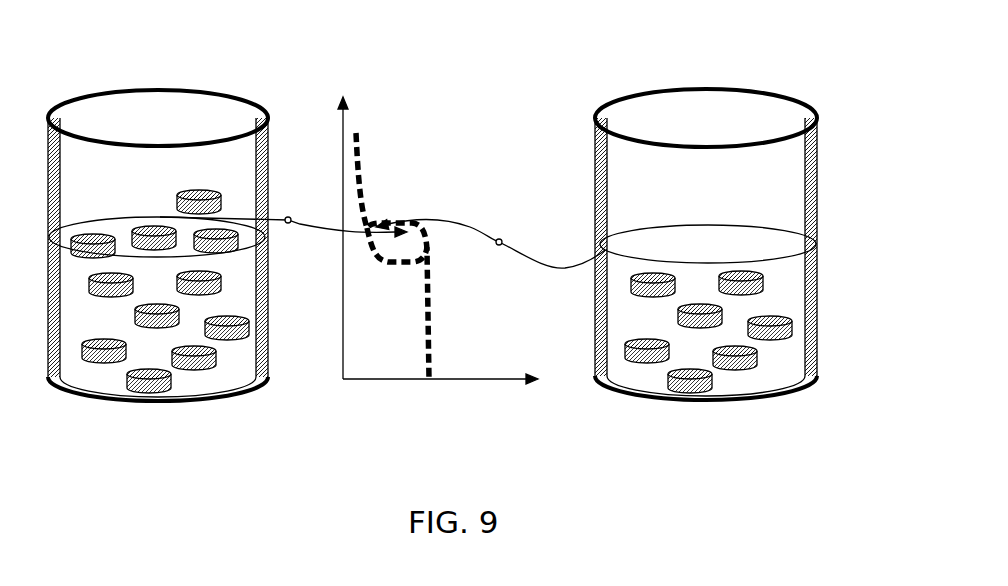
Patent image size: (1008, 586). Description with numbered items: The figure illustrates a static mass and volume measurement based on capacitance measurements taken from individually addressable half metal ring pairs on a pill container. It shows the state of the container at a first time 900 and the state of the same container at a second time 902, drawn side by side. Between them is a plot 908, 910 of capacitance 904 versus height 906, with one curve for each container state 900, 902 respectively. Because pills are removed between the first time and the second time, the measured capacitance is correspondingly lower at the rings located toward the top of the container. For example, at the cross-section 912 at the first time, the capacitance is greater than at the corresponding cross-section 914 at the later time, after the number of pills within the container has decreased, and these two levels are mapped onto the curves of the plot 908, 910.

The container state at a first time 900 is at (270, 76).
The container state at a second time 902 is at (818, 76).
The capacitance 904 is at (357, 380).
The height 906 is at (343, 353).
The plot of capacitance versus height for the first container state 908 is at (383, 184).
The plot of capacitance versus height for the second container state 910 is at (399, 276).
The cross-section at the first time 912 is at (290, 224).
The corresponding cross-section at the later time 914 is at (500, 246).